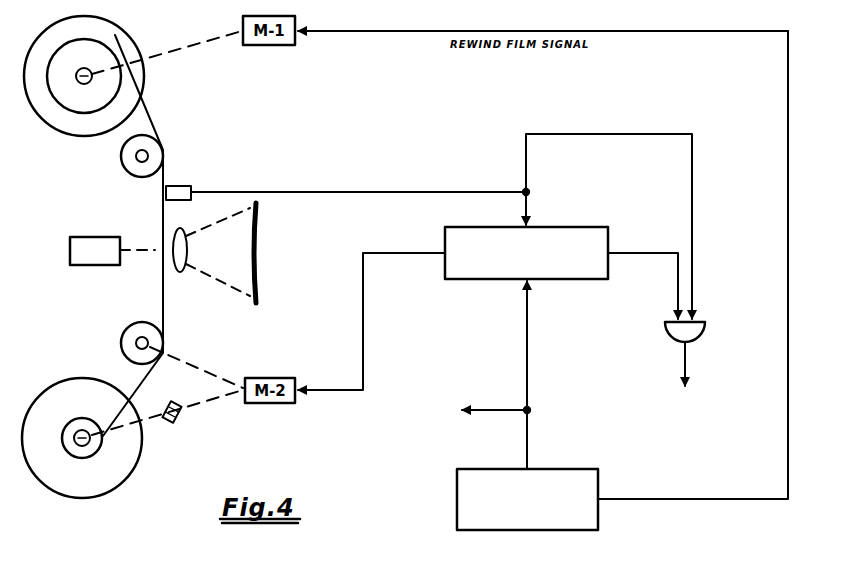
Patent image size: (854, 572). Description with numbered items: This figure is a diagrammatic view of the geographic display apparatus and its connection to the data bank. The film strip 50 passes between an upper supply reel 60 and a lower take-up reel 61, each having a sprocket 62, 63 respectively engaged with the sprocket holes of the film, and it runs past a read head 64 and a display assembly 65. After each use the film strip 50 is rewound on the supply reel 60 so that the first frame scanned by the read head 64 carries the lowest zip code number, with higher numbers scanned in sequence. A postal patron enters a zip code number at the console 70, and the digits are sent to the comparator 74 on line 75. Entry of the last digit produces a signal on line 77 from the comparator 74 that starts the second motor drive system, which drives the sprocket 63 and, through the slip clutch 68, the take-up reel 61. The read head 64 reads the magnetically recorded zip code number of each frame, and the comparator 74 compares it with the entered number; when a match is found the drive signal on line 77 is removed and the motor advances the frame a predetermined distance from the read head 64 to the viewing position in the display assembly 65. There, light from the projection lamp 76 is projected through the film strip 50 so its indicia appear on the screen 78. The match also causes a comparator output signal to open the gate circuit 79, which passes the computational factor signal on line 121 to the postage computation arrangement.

The film strip 50 is at (163, 215).
The supply reel 60 is at (122, 36).
The take-up reel 61 is at (127, 466).
The sprocket 62 is at (157, 148).
The sprocket 63 is at (157, 339).
The read head 64 is at (191, 187).
The display assembly 65 is at (146, 268).
The slip clutch 68 is at (180, 420).
The console 70 is at (584, 472).
The comparator 74 is at (589, 227).
The line 75 is at (523, 350).
The projection lamp 76 is at (70, 237).
The line 77 is at (358, 336).
The screen 78 is at (257, 239).
The gate circuit 79 is at (700, 322).
The line 121 is at (686, 365).